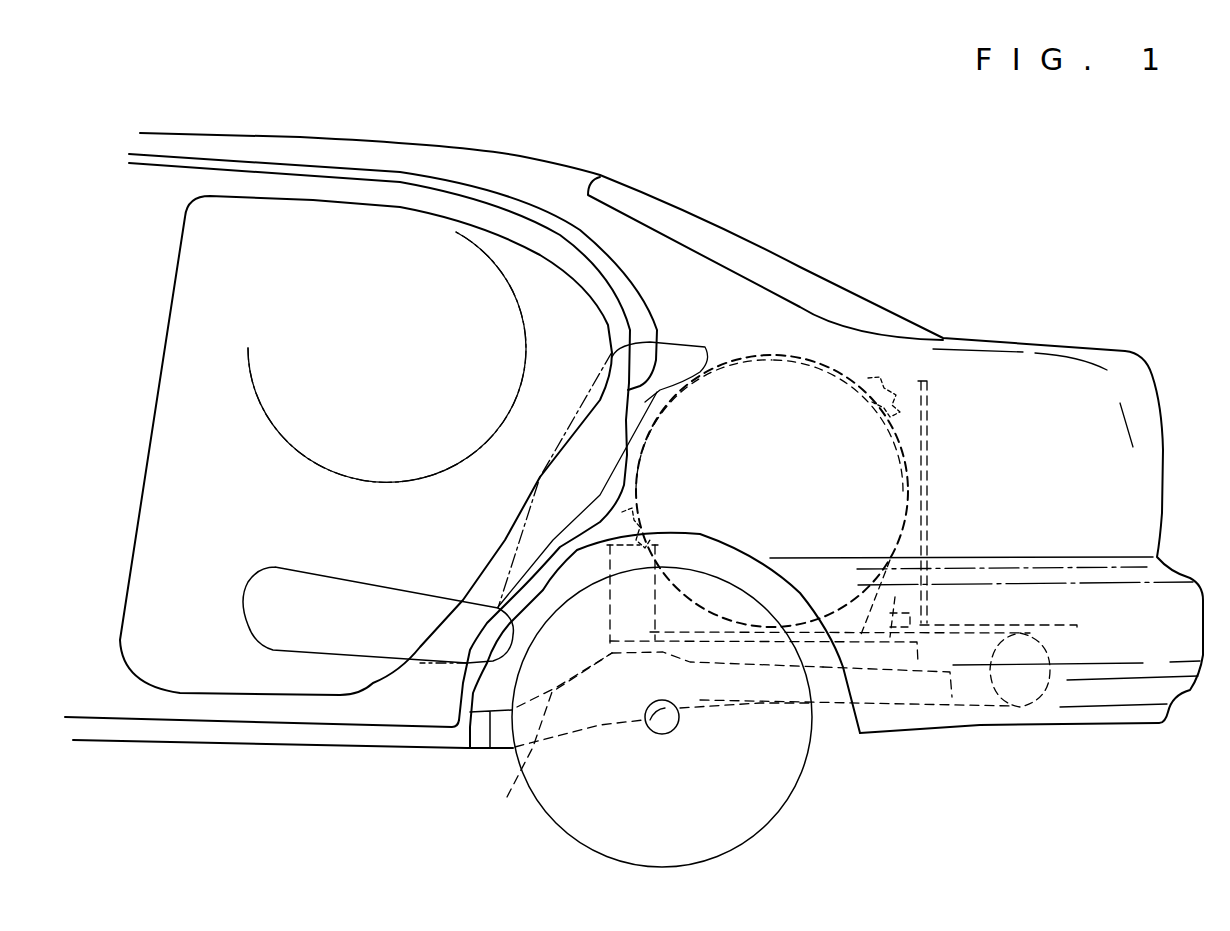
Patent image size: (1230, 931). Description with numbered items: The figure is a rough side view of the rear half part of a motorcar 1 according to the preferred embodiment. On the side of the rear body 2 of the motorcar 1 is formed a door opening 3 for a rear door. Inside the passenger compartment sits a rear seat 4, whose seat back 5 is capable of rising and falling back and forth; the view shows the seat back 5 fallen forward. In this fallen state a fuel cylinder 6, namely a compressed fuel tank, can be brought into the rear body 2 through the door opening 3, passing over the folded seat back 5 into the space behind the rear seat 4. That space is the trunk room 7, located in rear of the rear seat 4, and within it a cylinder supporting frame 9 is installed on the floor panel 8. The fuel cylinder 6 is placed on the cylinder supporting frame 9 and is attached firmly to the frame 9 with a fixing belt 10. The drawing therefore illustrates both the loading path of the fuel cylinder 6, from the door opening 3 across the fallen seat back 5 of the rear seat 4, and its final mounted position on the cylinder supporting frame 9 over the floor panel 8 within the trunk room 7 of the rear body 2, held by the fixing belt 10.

The motorcar 1 is at (648, 158).
The rear body 2 is at (487, 167).
The door opening 3 is at (315, 200).
The rear seat 4 is at (373, 580).
The seat back 5 is at (527, 510).
The fuel cylinder 6 is at (250, 385).
The trunk room 7 is at (1022, 380).
The floor panel 8 is at (492, 750).
The cylinder supporting frame 9 is at (635, 653).
The fixing belt 10 is at (850, 373).